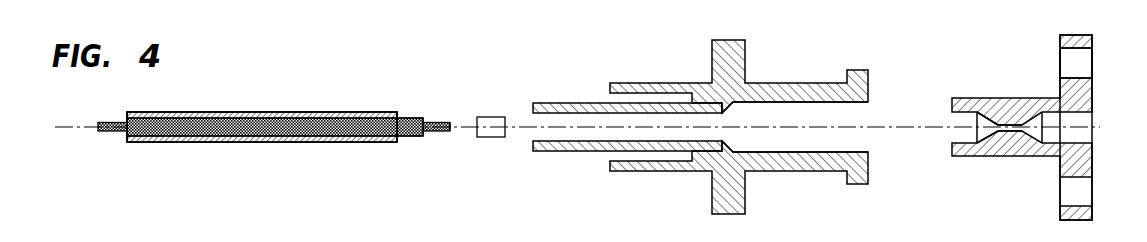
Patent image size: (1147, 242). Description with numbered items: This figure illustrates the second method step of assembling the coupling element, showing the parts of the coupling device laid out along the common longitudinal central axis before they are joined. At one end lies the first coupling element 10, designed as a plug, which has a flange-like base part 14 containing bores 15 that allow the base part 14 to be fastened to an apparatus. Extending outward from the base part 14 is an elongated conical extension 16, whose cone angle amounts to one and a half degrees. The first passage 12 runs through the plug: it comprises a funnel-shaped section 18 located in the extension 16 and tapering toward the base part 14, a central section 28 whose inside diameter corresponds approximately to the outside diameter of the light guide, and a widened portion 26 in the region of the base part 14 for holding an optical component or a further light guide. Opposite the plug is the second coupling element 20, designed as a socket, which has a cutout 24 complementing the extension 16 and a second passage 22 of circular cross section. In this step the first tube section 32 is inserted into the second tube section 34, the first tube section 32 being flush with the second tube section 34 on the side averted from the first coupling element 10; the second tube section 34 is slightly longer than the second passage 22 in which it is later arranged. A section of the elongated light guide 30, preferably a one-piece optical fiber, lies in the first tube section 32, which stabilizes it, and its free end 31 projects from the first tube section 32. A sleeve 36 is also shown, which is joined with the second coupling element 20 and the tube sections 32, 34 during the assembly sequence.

The first coupling element 10 is at (995, 98).
The first passage 12 is at (1013, 110).
The base part 14 is at (1087, 163).
The bores 15 is at (1080, 63).
The extension 16 is at (963, 100).
The funnel-shaped section 18 is at (985, 136).
The second coupling element 20 is at (668, 83).
The second passage 22 is at (561, 124).
The cutout 24 is at (817, 146).
The widened portion 26 is at (1060, 136).
The central section 28 is at (900, 126).
The light guide 30 is at (433, 122).
The free end 31 is at (449, 132).
The first tube section 32 is at (405, 137).
The second tube section 34 is at (240, 112).
The sleeve 36 is at (491, 122).